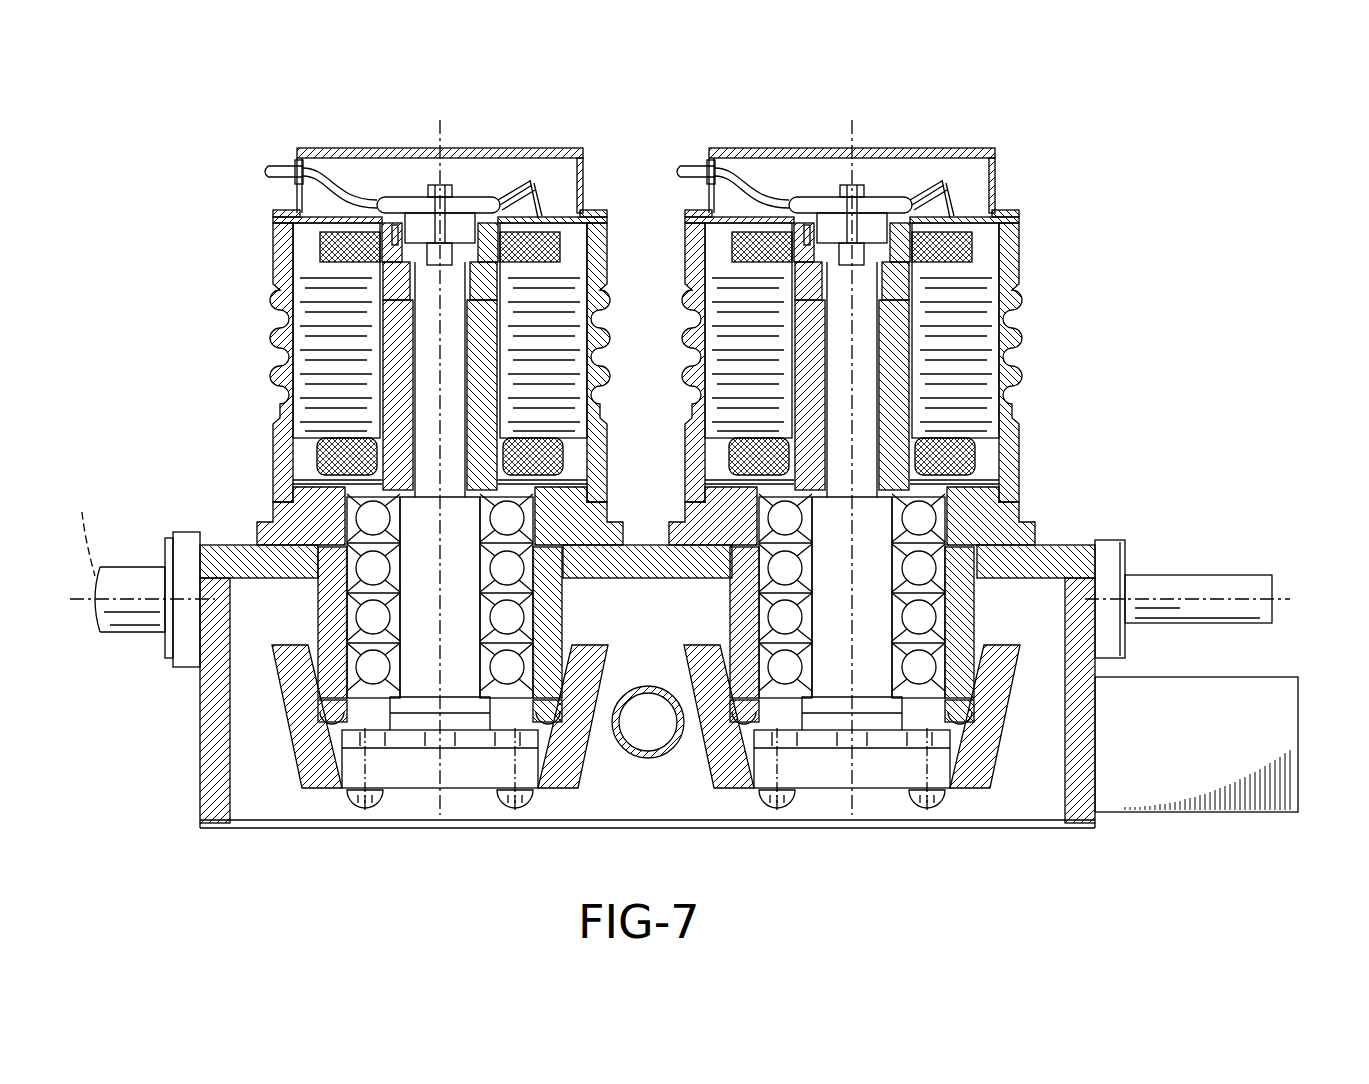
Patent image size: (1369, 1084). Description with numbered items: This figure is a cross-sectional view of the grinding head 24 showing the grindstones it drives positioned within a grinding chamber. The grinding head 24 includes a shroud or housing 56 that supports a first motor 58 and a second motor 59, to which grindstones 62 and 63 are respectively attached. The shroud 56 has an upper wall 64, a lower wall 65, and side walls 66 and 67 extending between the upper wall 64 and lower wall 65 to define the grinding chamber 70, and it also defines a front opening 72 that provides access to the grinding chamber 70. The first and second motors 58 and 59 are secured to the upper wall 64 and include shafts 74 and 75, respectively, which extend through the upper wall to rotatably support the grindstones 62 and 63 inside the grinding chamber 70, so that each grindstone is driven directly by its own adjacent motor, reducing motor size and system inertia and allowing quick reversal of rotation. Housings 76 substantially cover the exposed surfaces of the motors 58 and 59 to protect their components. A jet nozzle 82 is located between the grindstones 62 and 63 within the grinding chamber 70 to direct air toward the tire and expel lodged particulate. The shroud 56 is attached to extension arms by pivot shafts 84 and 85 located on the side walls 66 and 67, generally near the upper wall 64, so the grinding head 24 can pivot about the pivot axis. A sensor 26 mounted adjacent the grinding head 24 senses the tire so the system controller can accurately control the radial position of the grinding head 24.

The grinding head 24 is at (232, 138).
The sensor 26 is at (1300, 722).
The shroud 56 is at (197, 735).
The first motor 58 is at (340, 147).
The second motor 59 is at (778, 147).
The grindstone 62 is at (298, 720).
The grindstone 63 is at (702, 680).
The upper wall 64 is at (247, 572).
The lower wall 65 is at (452, 830).
The side wall 66 is at (217, 787).
The side wall 67 is at (1080, 770).
The grinding chamber 70 is at (660, 668).
The front opening 72 is at (615, 772).
The shaft 74 is at (455, 633).
The shaft 75 is at (860, 633).
The housing 76 is at (372, 148).
The jet nozzle 82 is at (665, 753).
The pivot shaft 84 is at (120, 576).
The pivot shaft 85 is at (1188, 584).